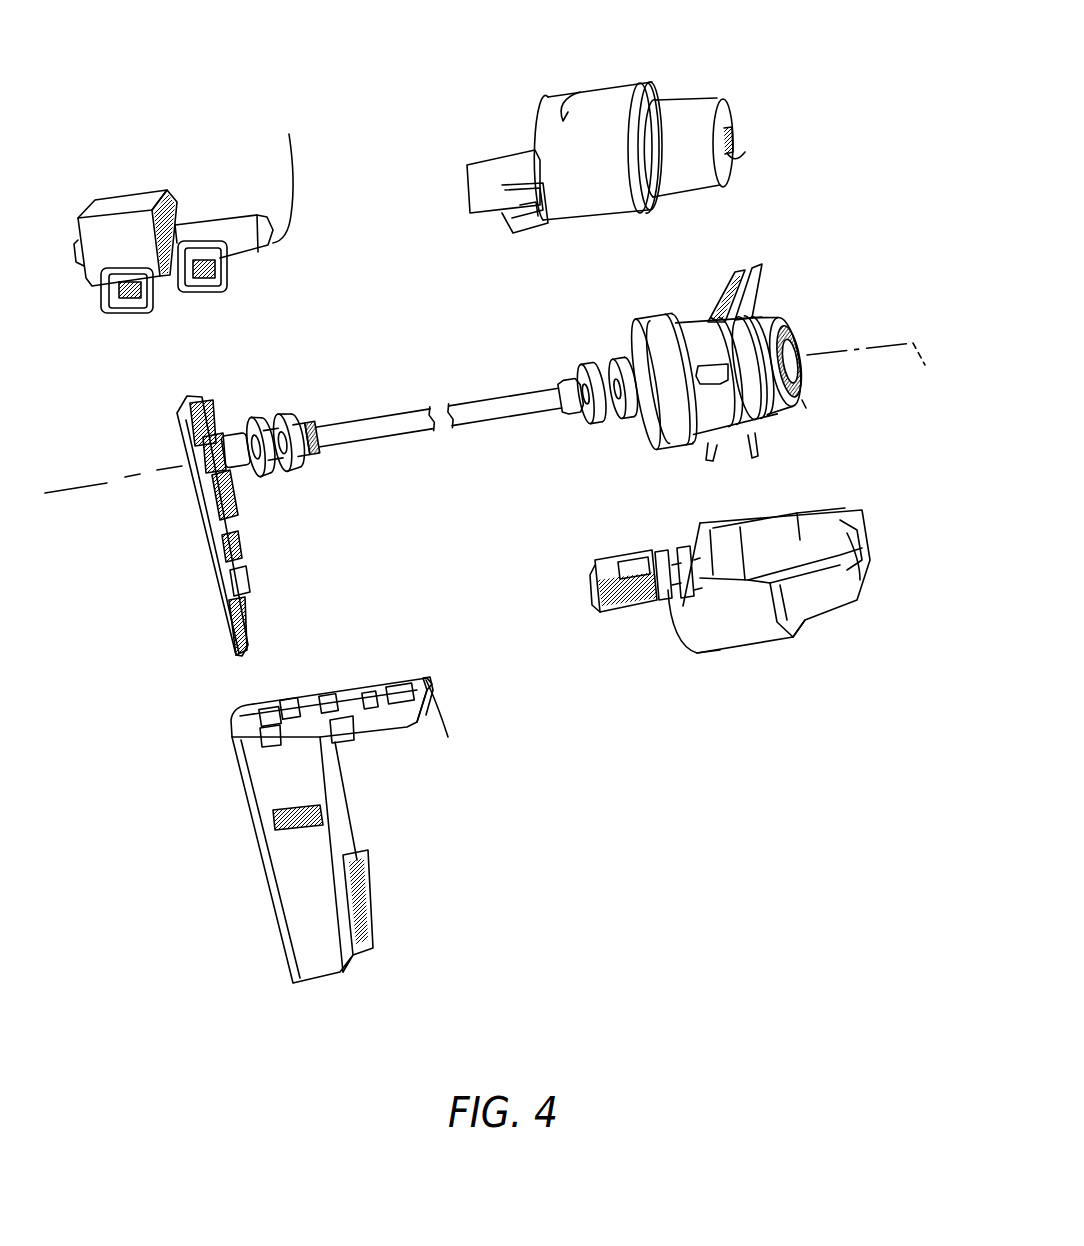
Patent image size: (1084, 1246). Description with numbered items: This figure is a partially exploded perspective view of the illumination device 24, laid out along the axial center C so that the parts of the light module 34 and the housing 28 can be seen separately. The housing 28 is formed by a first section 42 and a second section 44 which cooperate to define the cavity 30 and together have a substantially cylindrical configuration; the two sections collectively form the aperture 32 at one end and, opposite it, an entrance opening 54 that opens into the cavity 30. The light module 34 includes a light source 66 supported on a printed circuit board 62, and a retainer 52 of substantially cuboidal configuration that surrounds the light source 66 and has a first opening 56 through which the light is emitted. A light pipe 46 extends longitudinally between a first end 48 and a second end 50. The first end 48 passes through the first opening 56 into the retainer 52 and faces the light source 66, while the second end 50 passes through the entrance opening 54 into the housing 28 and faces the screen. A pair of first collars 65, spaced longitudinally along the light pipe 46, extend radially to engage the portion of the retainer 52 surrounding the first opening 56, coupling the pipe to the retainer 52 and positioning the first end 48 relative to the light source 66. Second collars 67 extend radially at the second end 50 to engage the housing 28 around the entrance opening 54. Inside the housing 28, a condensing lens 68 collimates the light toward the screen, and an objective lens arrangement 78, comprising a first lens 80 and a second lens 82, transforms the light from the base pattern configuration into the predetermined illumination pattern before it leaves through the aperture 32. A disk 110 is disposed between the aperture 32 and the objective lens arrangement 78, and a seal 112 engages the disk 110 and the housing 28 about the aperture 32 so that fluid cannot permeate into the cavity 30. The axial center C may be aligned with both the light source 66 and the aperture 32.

The illumination device 24 is at (515, 88).
The housing 28 is at (667, 83).
The cavity 30 is at (795, 535).
The aperture 32 is at (730, 154).
The light module 34 is at (337, 194).
The first section 42 is at (563, 118).
The second section 44 is at (717, 637).
The light pipe 46 is at (371, 412).
The first end 48 is at (214, 402).
The second end 50 is at (627, 332).
The retainer 52 is at (84, 207).
The entrance opening 54 is at (595, 565).
The first opening 56 is at (380, 426).
The printed circuit board 62 is at (203, 563).
The first collar 65 is at (253, 405).
The light source 66 is at (232, 420).
The second collar 67 is at (619, 352).
The condensing lens 68 is at (668, 310).
The objective lens arrangement 78 is at (762, 266).
The first lens 80 is at (716, 430).
The second lens 82 is at (750, 420).
The disk 110 is at (796, 340).
The seal 112 is at (800, 404).
The axial center C is at (880, 363).